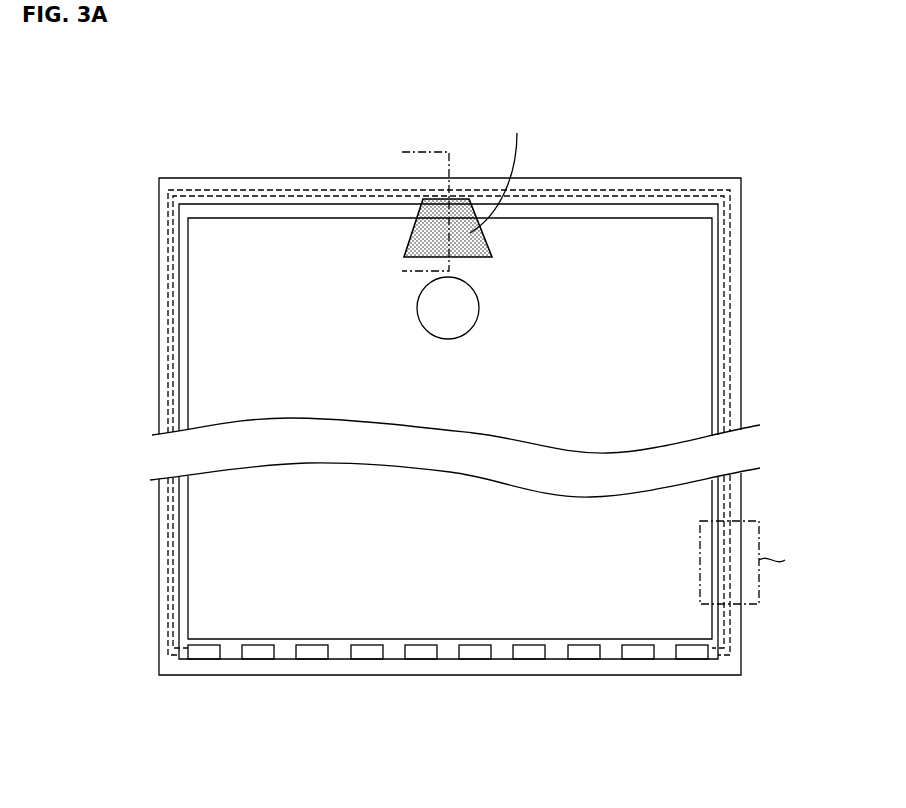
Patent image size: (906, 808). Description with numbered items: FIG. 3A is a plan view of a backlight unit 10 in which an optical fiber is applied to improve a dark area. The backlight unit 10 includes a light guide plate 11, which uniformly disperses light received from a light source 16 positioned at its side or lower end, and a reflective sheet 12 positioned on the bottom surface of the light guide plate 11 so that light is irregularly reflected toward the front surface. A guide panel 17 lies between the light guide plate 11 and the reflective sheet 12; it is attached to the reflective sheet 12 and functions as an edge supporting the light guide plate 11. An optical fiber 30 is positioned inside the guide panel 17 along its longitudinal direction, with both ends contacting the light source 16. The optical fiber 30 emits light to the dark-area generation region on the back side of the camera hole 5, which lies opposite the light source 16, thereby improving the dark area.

The backlight unit 10 is at (172, 97).
The light guide plate 11 is at (213, 300).
The reflective sheet 12 is at (186, 340).
The guide panel 17 is at (162, 385).
The optical fiber 30 is at (160, 498).
The camera hole 5 is at (465, 310).
The light source 16 is at (477, 650).